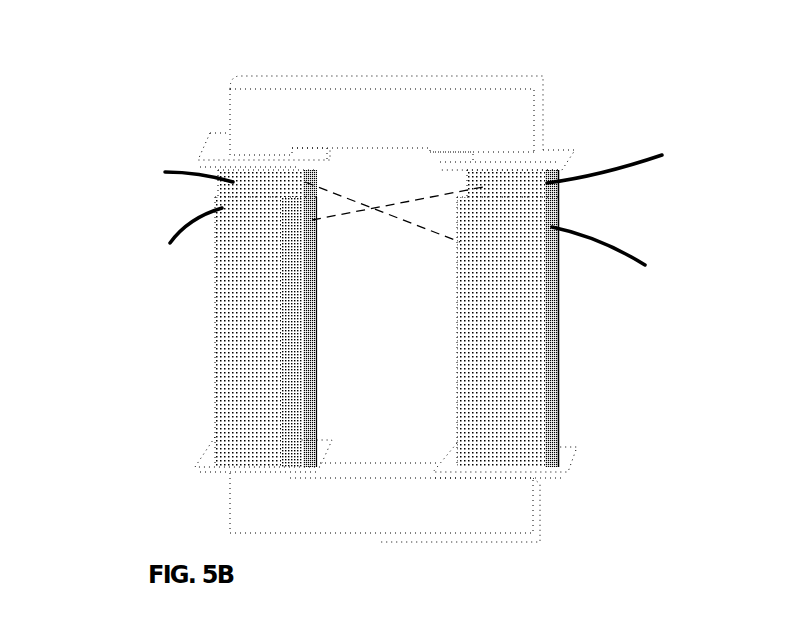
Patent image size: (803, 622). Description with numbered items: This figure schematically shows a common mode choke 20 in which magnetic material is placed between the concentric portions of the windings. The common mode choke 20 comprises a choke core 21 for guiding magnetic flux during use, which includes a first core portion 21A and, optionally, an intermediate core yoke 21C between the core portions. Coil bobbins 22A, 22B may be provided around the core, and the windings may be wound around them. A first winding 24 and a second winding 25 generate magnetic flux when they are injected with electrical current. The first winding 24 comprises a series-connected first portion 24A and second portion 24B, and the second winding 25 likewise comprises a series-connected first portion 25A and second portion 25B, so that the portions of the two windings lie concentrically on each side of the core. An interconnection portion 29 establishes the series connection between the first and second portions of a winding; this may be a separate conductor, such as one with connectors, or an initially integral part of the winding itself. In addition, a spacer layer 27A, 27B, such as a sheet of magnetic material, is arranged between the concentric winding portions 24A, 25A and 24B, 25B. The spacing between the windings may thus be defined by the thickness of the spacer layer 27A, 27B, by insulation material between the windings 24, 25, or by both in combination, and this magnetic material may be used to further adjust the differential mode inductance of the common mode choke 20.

The common mode choke 20 is at (111, 47).
The choke core 21 is at (212, 95).
The first core portion 21A is at (205, 347).
The intermediate core yoke 21C is at (411, 91).
The coil bobbin 22A is at (213, 160).
The coil bobbin 22B is at (557, 158).
The first winding 24 is at (170, 243).
The first portion of the first winding 24A is at (223, 228).
The second portion of the first winding 24B is at (537, 188).
The second winding 25 is at (170, 170).
The first portion of the second winding 25A is at (233, 190).
The second portion of the second winding 25B is at (548, 260).
The spacer layer 27A is at (232, 208).
The spacer layer 27B is at (470, 202).
The interconnection portion 29 is at (408, 250).